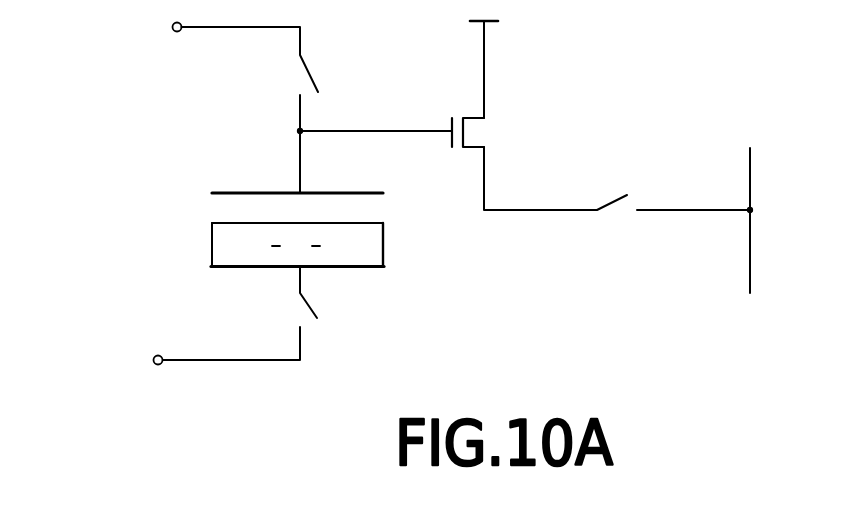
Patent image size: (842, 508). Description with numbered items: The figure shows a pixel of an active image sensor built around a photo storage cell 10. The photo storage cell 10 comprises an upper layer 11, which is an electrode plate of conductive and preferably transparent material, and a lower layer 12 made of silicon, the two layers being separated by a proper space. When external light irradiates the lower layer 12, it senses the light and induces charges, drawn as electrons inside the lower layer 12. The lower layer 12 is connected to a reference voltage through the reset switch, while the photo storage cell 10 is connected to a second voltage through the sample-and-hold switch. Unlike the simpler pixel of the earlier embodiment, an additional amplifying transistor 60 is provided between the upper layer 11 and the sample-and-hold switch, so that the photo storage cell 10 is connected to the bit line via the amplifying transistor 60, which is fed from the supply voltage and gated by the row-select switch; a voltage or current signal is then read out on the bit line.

The photo storage cell 10 is at (118, 222).
The upper layer 11 is at (272, 192).
The lower layer 12 is at (228, 259).
The amplifying transistor 60 is at (497, 128).